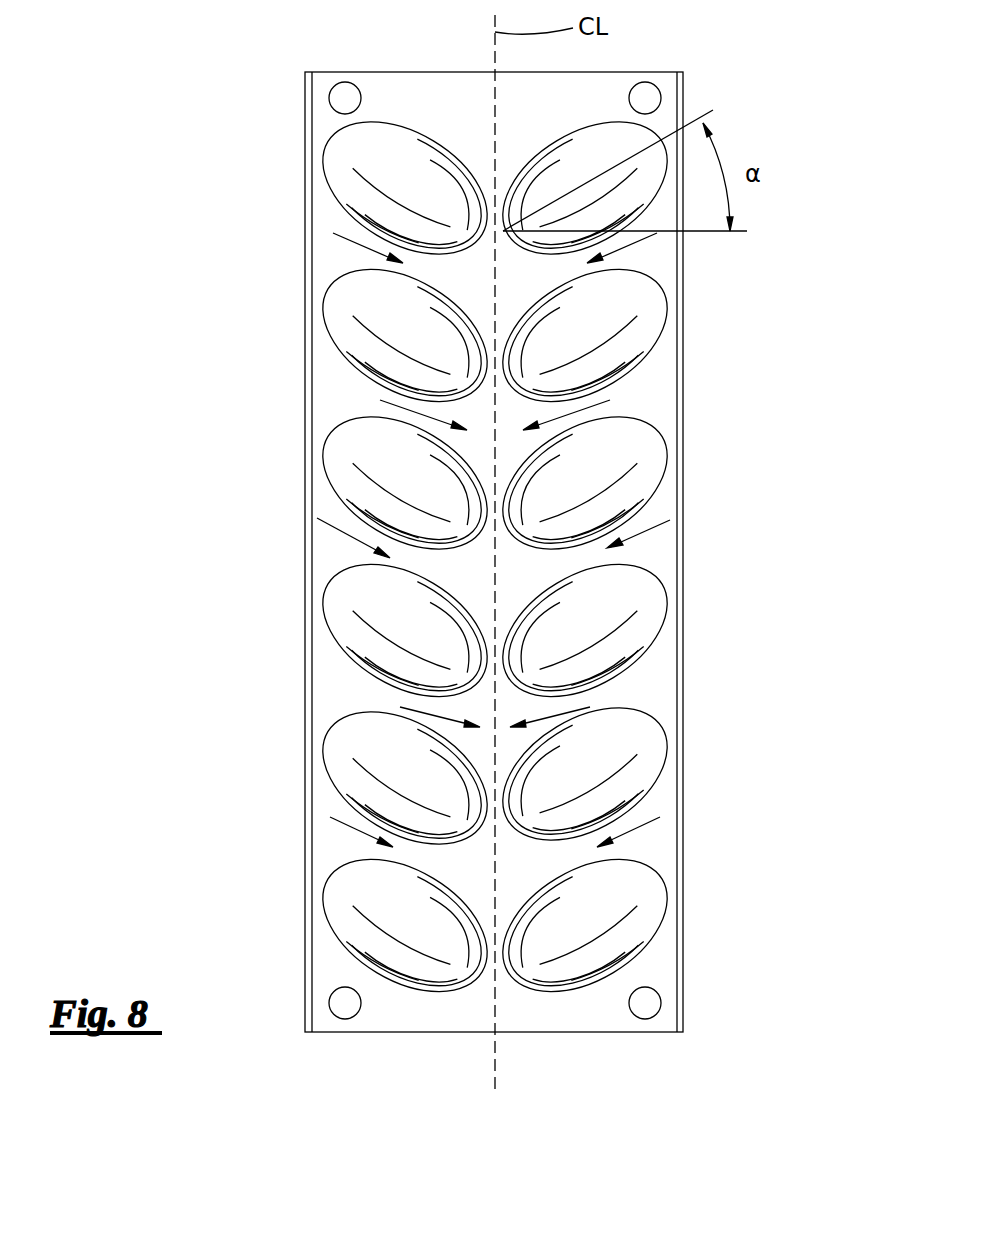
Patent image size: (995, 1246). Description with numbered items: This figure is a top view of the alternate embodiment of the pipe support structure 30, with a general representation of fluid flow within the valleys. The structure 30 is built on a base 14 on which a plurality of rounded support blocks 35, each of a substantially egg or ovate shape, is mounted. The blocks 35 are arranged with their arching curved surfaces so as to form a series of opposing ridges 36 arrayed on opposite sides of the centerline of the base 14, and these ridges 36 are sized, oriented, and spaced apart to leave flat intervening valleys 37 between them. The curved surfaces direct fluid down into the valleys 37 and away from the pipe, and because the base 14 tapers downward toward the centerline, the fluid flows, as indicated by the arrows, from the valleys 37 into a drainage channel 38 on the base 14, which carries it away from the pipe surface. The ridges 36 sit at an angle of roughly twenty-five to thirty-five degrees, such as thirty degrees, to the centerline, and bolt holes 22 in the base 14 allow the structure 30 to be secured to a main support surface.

The base 14 is at (330, 358).
The bolt holes 22 is at (338, 93).
The pipe support structure 30 is at (460, 552).
The support blocks 35 is at (388, 160).
The ridges 36 is at (360, 226).
The valleys 37 is at (565, 270).
The drainage channel 38 is at (495, 193).